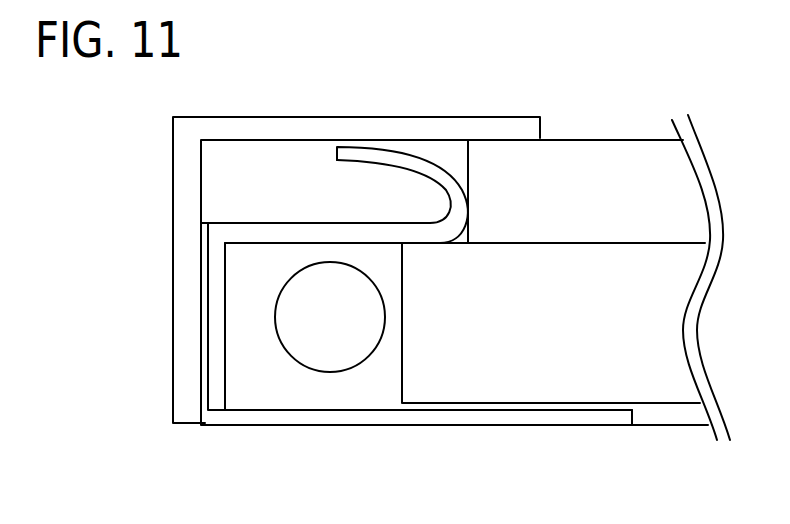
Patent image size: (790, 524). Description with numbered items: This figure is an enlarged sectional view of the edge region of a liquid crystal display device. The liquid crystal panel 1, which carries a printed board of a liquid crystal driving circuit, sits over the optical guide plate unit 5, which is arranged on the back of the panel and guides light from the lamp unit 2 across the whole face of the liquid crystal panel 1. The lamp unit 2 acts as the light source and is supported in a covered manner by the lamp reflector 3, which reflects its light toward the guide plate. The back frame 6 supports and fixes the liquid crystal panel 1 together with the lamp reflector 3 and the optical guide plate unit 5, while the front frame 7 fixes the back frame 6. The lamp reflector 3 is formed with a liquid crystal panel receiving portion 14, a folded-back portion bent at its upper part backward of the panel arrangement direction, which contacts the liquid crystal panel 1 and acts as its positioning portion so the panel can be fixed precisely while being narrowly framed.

The liquid crystal panel 1 is at (668, 170).
The lamp unit 2 is at (343, 348).
The lamp reflector 3 is at (265, 418).
The optical guide plate unit 5 is at (662, 335).
The back frame 6 is at (690, 412).
The front frame 7 is at (270, 128).
The liquid crystal panel receiving portion 14 is at (440, 178).